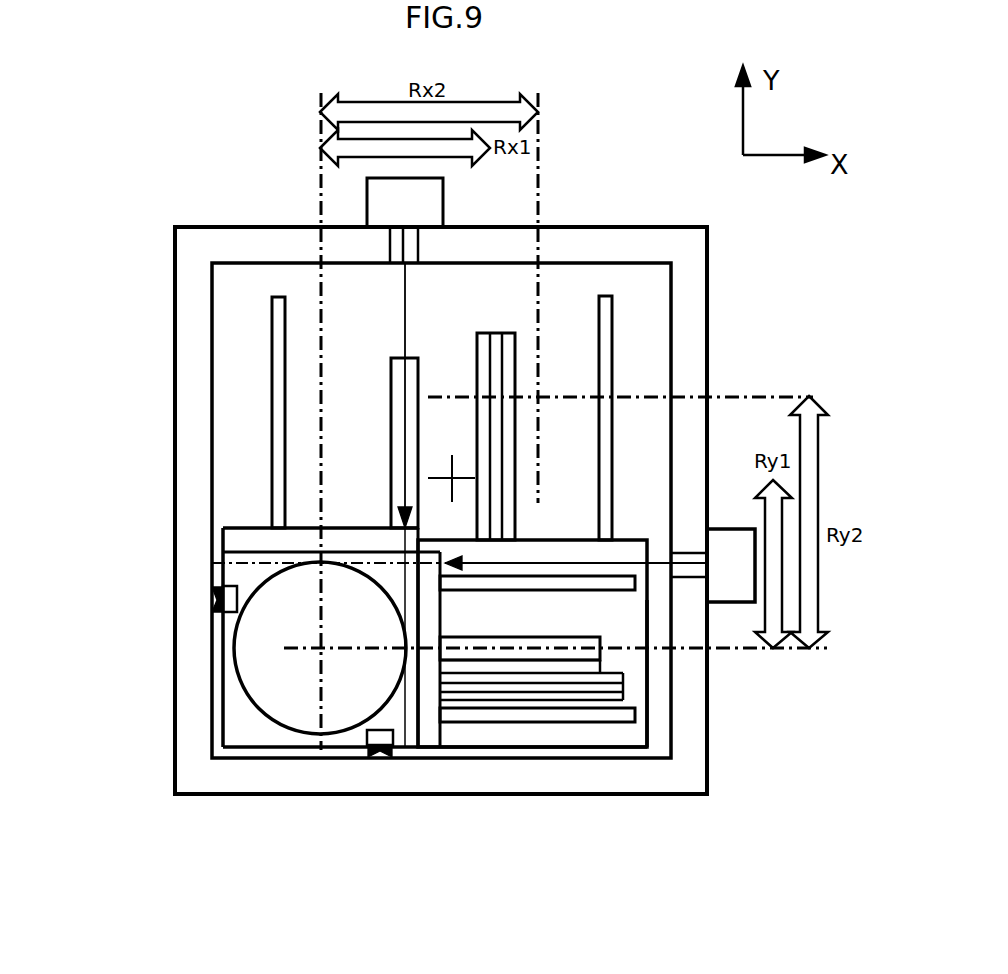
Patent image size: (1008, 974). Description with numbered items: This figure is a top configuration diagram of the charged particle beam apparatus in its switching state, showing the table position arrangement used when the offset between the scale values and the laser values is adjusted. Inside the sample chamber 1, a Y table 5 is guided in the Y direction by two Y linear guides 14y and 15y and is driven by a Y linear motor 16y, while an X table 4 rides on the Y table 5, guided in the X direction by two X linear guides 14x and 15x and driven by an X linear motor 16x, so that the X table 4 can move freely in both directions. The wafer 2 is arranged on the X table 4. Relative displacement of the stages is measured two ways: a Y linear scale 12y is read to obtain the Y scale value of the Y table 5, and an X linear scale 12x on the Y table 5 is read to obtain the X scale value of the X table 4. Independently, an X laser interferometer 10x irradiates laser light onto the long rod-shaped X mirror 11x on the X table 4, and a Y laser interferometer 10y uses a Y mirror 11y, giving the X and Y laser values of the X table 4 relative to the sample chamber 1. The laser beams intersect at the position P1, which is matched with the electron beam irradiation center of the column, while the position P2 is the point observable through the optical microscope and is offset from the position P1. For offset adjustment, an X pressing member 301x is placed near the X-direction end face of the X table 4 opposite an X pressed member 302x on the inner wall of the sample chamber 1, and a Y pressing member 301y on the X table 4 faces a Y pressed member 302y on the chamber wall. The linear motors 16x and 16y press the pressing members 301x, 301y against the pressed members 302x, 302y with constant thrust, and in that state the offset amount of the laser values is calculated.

The sample chamber 1 is at (441, 484).
The wafer 2 is at (304, 722).
The X table 4 is at (406, 572).
The Y table 5 is at (711, 726).
The X laser interferometer 10x is at (742, 649).
The Y laser interferometer 10y is at (490, 209).
The X mirror 11x is at (532, 716).
The Y mirror 11y is at (363, 614).
The X linear scale 12x is at (531, 776).
The Y linear scale 12y is at (245, 505).
The X linear guide 14x is at (537, 800).
The Y linear guide 14y is at (227, 334).
The X linear guide 15x is at (560, 734).
The Y linear guide 15y is at (709, 418).
The X linear motor 16x is at (587, 764).
The Y linear motor 16y is at (648, 391).
The X pressing member 301x is at (137, 616).
The Y pressing member 301y is at (345, 813).
The X pressed member 302x is at (140, 586).
The Y pressed member 302y is at (403, 806).
The position P1 is at (395, 496).
The position P2 is at (279, 425).